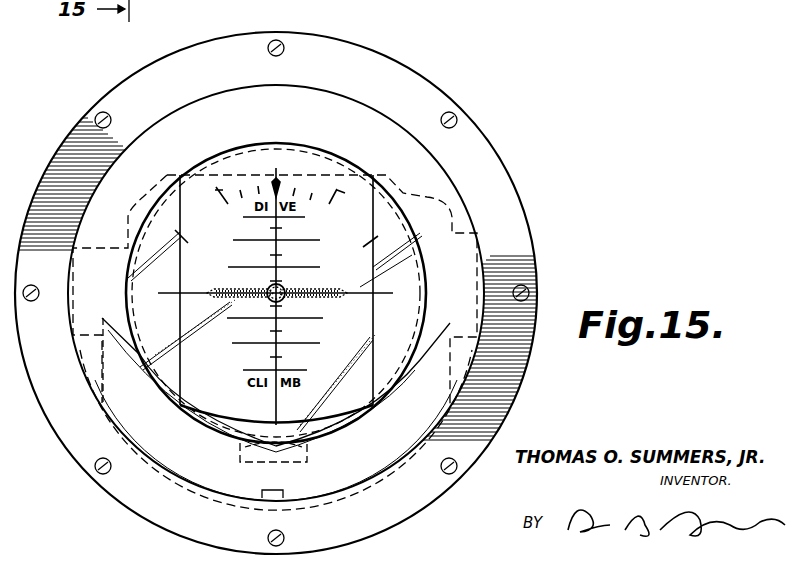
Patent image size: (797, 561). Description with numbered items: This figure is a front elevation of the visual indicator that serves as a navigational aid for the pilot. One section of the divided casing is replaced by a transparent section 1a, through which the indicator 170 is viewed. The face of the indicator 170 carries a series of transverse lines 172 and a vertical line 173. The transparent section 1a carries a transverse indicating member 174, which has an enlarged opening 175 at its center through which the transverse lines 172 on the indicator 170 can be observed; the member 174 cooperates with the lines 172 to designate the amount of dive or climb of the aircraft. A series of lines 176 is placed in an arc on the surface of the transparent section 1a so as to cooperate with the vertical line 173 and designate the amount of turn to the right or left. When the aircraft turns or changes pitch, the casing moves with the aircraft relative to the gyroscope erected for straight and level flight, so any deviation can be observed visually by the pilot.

The transparent section 1a is at (432, 181).
The indicator 170 is at (348, 405).
The transverse lines 172 is at (303, 267).
The vertical line 173 is at (280, 238).
The transverse indicating member 174 is at (222, 290).
The enlarged opening 175 is at (305, 285).
The series of lines 176 is at (220, 193).